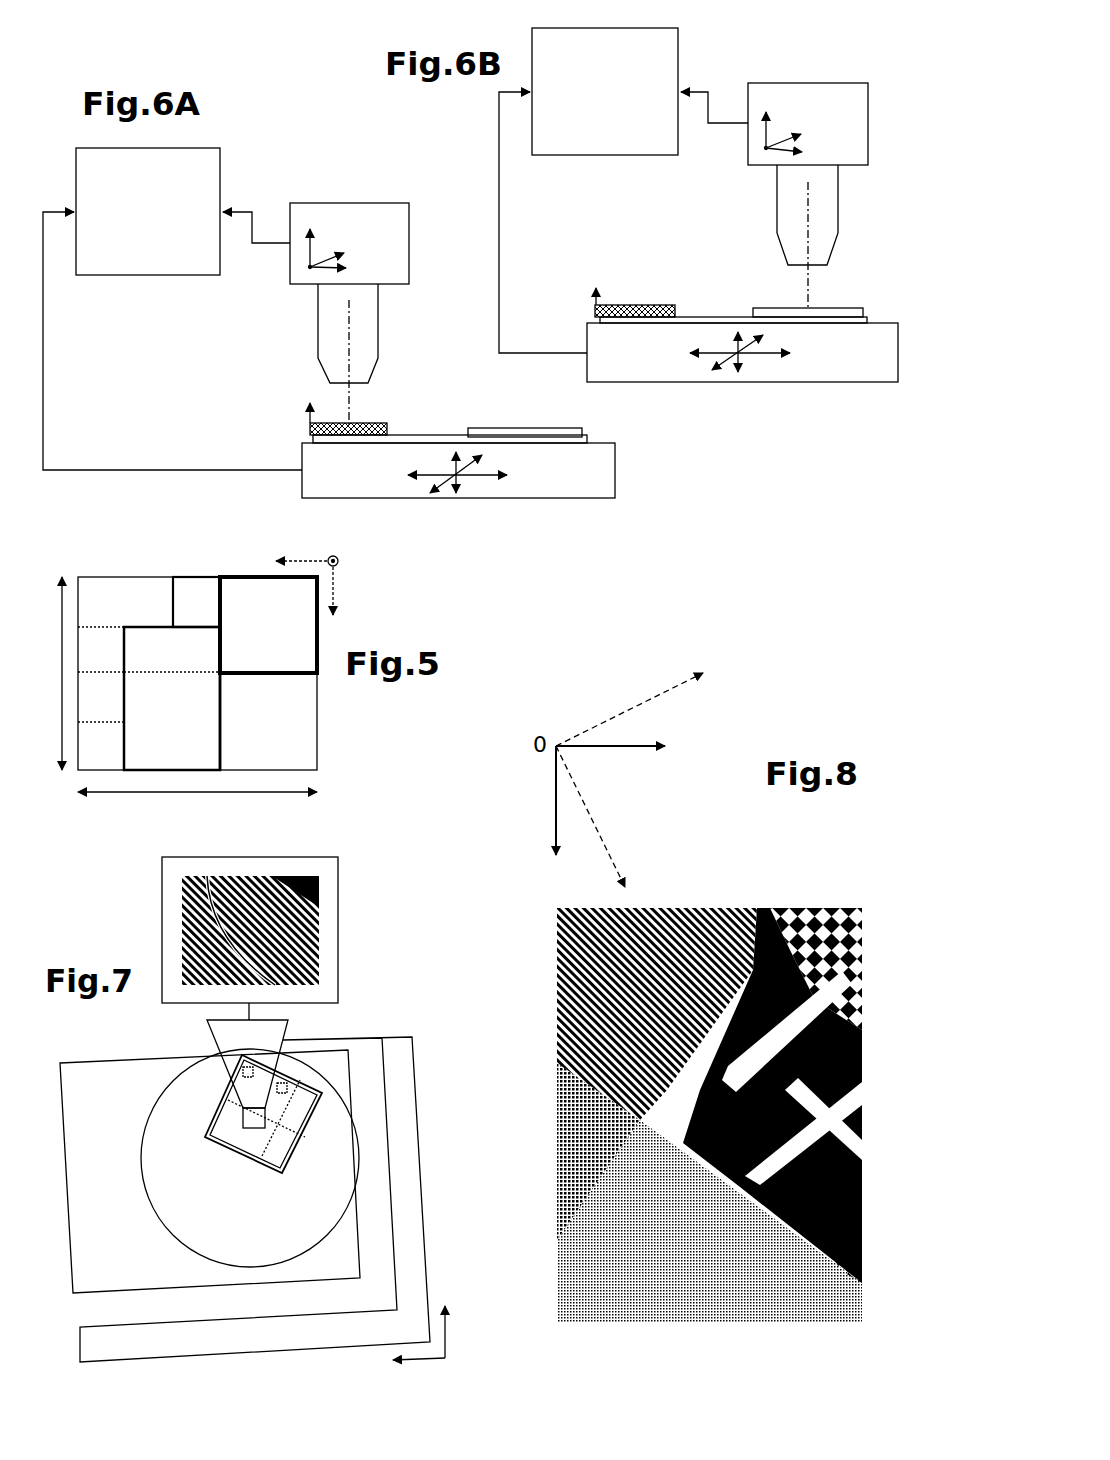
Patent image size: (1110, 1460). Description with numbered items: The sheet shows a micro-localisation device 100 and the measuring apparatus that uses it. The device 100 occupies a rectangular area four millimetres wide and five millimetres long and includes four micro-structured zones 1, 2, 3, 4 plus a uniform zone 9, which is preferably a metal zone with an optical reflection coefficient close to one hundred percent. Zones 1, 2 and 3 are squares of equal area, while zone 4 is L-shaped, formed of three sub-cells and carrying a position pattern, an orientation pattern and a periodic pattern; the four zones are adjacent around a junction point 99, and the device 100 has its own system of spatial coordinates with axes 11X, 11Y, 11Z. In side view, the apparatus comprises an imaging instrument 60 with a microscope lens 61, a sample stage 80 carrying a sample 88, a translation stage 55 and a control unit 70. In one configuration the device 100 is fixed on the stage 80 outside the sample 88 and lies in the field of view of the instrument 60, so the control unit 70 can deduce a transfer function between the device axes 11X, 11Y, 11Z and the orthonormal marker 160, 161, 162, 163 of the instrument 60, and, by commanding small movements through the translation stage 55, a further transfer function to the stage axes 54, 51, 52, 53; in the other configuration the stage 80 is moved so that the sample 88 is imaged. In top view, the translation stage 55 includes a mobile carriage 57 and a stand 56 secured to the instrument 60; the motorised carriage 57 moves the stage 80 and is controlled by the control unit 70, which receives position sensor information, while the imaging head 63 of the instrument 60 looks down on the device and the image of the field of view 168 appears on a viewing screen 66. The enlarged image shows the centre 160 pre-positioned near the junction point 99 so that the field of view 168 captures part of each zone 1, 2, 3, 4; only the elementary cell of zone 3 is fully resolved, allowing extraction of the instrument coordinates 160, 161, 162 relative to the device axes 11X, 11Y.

In FIG. 6A, the control unit 70 is at (135, 224).
In FIG. 6B, the control unit 70 is at (592, 110).
In FIG. 6A, the imaging instrument 60 is at (322, 201).
In FIG. 6B, the imaging instrument 60 is at (777, 82).
In FIG. 6A, the third axis of imaging instrument marker 163 is at (335, 236).
In FIG. 6B, the third axis of imaging instrument marker 163 is at (787, 117).
In FIG. 6A, the first axis of imaging instrument marker 161 is at (354, 246).
In FIG. 6B, the first axis of imaging instrument marker 161 is at (807, 128).
In FIG. 8, the first axis of imaging instrument marker 161 is at (627, 747).
In FIG. 6A, the second axis of imaging instrument marker 162 is at (356, 267).
In FIG. 6B, the second axis of imaging instrument marker 162 is at (810, 148).
In FIG. 8, the second axis of imaging instrument marker 162 is at (555, 810).
In FIG. 6A, the centre of the imaging instrument 160 is at (302, 266).
In FIG. 6B, the centre of the imaging instrument 160 is at (762, 150).
In FIG. 6A, the microscope lens 61 is at (380, 313).
In FIG. 6B, the microscope lens 61 is at (840, 193).
In FIG. 6A, the X axis of micro-localisation device coordinates 11X is at (312, 422).
In FIG. 6B, the X axis of micro-localisation device coordinates 11X is at (607, 303).
In FIG. 5, the X axis of micro-localisation device coordinates 11X is at (361, 582).
In FIG. 8, the X axis of micro-localisation device coordinates 11X is at (650, 697).
In FIG. 6A, the Z axis of micro-localisation device coordinates 11Z is at (293, 410).
In FIG. 6B, the Z axis of micro-localisation device coordinates 11Z is at (593, 293).
In FIG. 5, the Y axis of micro-localisation device coordinates 11Y is at (301, 543).
In FIG. 8, the Y axis of micro-localisation device coordinates 11Y is at (595, 815).
In FIG. 6A, the micro-localisation device 100 is at (372, 423).
In FIG. 6B, the micro-localisation device 100 is at (642, 305).
In FIG. 5, the micro-localisation device 100 is at (77, 772).
In FIG. 7, the micro-localisation device 100 is at (207, 1122).
In FIG. 6A, the sample 88 is at (563, 432).
In FIG. 6B, the sample 88 is at (827, 306).
In FIG. 7, the sample 88 is at (145, 1193).
In FIG. 6A, the second translation axis 52 is at (468, 426).
In FIG. 6B, the second translation axis 52 is at (760, 333).
In FIG. 7, the second translation axis 52 is at (399, 1367).
In FIG. 6A, the sample stage 80 is at (616, 447).
In FIG. 6B, the sample stage 80 is at (877, 323).
In FIG. 6A, the translation stage 55 is at (302, 460).
In FIG. 6B, the translation stage 55 is at (587, 342).
In FIG. 6A, the third translation axis 53 is at (447, 460).
In FIG. 6B, the third translation axis 53 is at (737, 337).
In FIG. 6A, the first translation axis 51 is at (508, 476).
In FIG. 6B, the first translation axis 51 is at (793, 350).
In FIG. 7, the first translation axis 51 is at (272, 1199).
In FIG. 6A, the origin of translation stage marker 54 is at (462, 492).
In FIG. 6B, the origin of translation stage marker 54 is at (743, 365).
In FIG. 7, the origin of translation stage marker 54 is at (460, 1384).
In FIG. 5, the uniform zone 9 is at (103, 577).
In FIG. 5, the fourth micro-structured zone 4 is at (207, 577).
In FIG. 8, the fourth micro-structured zone 4 is at (863, 1103).
In FIG. 5, the first micro-structured zone 1 is at (245, 597).
In FIG. 8, the first micro-structured zone 1 is at (720, 1277).
In FIG. 5, the third micro-structured zone 3 is at (160, 752).
In FIG. 8, the third micro-structured zone 3 is at (727, 907).
In FIG. 5, the second micro-structured zone 2 is at (300, 752).
In FIG. 8, the second micro-structured zone 2 is at (557, 1185).
In FIG. 5, the junction point 99 is at (222, 674).
In FIG. 8, the junction point 99 is at (643, 1120).
In FIG. 7, the viewing screen 66 is at (162, 900).
In FIG. 7, the camera 63 is at (290, 1028).
In FIG. 8, the field of view 168 is at (793, 1323).
In FIG. 7, the field of view 168 is at (205, 1130).
In FIG. 7, the stand 56 is at (275, 1330).
In FIG. 7, the mobile carriage 57 is at (73, 1280).